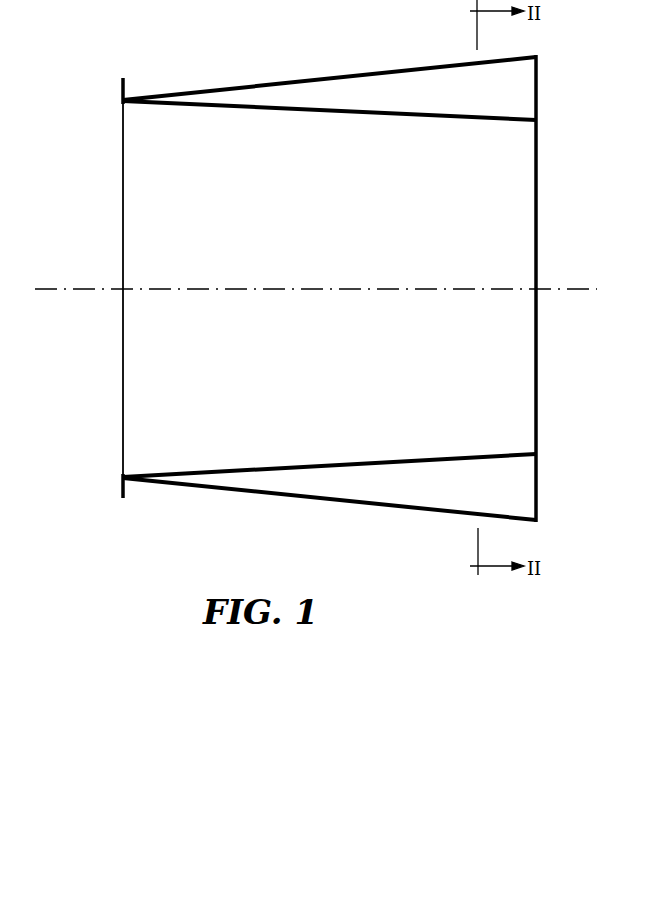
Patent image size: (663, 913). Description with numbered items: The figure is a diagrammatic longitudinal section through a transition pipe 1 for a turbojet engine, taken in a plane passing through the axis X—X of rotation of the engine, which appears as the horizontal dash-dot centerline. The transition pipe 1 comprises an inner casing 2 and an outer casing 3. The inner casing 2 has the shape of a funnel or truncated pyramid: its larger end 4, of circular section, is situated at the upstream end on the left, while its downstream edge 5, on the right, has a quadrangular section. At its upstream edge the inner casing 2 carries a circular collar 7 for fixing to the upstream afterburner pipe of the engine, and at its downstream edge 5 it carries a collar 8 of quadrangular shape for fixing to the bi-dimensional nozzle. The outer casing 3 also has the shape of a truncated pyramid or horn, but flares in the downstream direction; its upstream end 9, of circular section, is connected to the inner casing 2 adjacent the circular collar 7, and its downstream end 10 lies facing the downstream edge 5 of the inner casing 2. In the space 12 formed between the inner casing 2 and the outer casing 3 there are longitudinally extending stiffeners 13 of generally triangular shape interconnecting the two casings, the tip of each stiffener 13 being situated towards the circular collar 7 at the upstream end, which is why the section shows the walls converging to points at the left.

The transition pipe 1 is at (588, 84).
The inner casing 2 is at (505, 120).
The outer casing 3 is at (500, 62).
The larger end 4 is at (122, 129).
The downstream edge 5 is at (537, 222).
The circular collar 7 is at (123, 490).
The collar 8 is at (537, 470).
The upstream end 9 is at (174, 475).
The downstream end 10 is at (533, 56).
The space 12 is at (486, 99).
The stiffeners 13 is at (290, 88).
The axis of rotation X is at (317, 277).